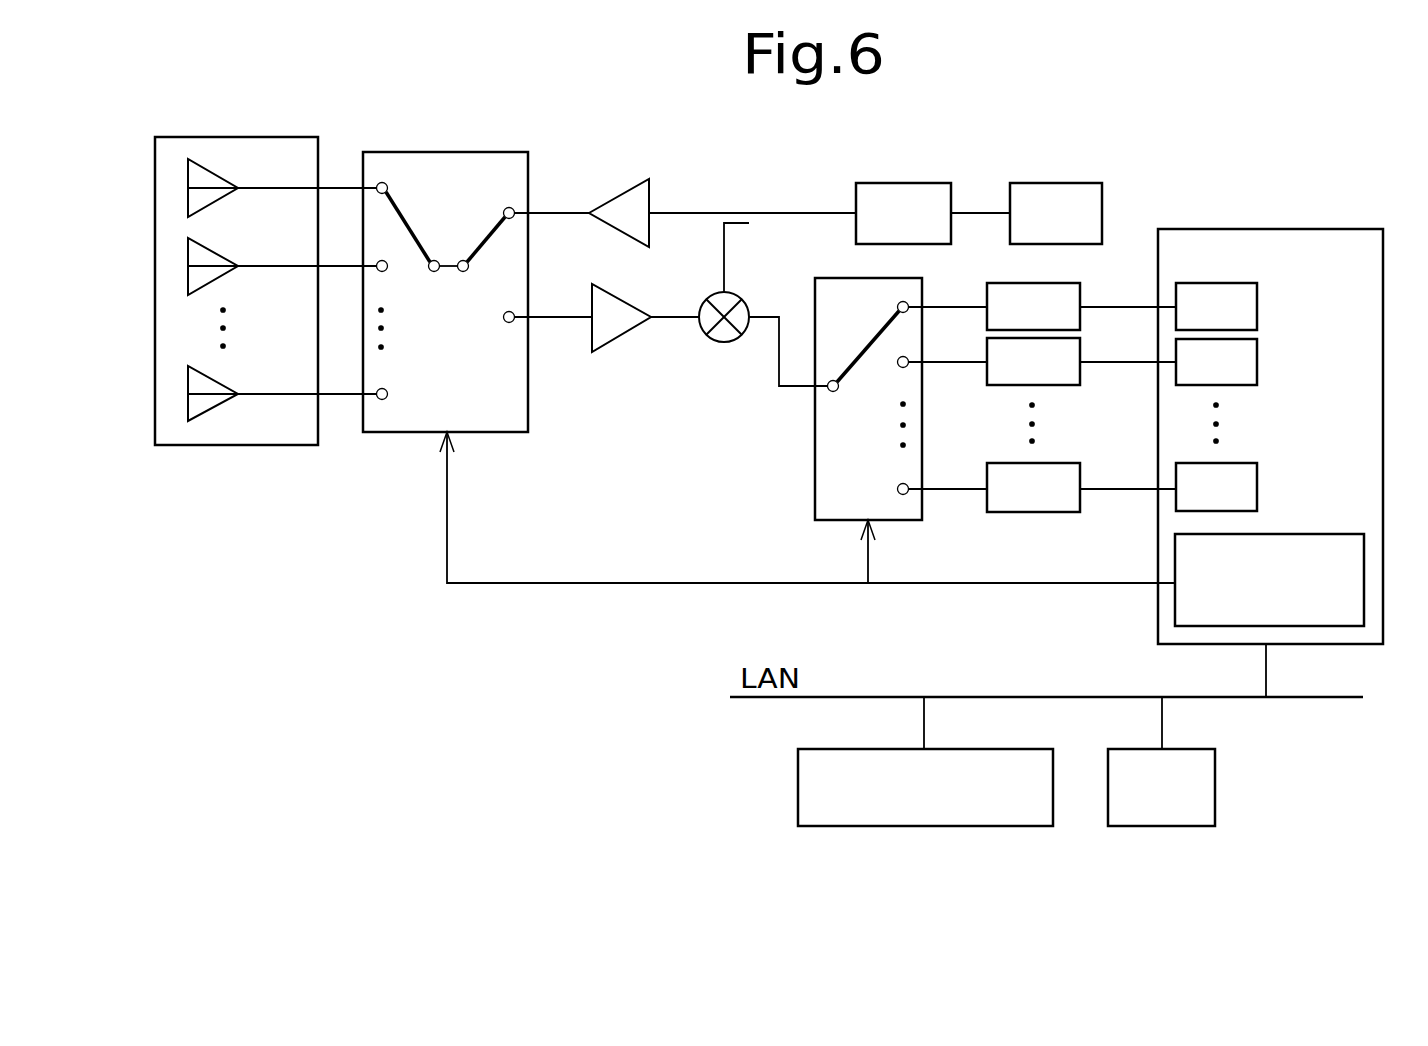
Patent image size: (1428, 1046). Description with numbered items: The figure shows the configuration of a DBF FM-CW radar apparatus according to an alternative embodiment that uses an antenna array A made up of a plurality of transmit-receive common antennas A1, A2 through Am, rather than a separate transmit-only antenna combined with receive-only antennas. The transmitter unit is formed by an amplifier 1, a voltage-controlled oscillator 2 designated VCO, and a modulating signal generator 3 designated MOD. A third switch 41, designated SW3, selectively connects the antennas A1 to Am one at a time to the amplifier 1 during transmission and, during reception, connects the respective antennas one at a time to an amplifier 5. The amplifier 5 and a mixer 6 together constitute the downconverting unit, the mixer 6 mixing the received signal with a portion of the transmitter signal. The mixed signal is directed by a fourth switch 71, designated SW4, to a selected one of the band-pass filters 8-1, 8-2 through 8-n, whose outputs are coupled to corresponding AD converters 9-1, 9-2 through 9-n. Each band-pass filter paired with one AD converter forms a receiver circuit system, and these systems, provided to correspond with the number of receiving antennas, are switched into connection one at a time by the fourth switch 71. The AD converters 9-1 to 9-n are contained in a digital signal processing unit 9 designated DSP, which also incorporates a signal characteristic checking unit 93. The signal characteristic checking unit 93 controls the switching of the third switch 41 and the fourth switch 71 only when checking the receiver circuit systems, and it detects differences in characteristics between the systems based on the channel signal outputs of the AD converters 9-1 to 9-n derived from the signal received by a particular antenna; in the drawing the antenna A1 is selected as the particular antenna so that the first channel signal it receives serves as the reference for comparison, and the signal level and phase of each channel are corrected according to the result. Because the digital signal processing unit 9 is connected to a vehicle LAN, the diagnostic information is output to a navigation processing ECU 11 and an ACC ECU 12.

The antenna array A is at (270, 137).
The transmit-receive common antenna A1 is at (188, 170).
The transmit-receive common antenna A2 is at (188, 252).
The transmit-receive common antenna Am is at (188, 378).
The third switch 41 is at (433, 152).
The amplifier 1 is at (628, 191).
The voltage-controlled oscillator 2 is at (900, 183).
The modulating signal generator 3 is at (1060, 183).
The amplifier 5 is at (617, 337).
The mixer 6 is at (727, 341).
The fourth switch 71 is at (815, 483).
The band-pass filter 8-1 is at (1080, 292).
The band-pass filter 8-2 is at (1080, 347).
The band-pass filter 8-n is at (1063, 463).
The digital signal processing unit 9 is at (1267, 229).
The AD converter 9-1 is at (1257, 308).
The AD converter 9-2 is at (1257, 362).
The AD converter 9-n is at (1257, 490).
The signal characteristic checking unit 93 is at (1364, 572).
The navigation processing ECU 11 is at (932, 826).
The ACC ECU 12 is at (1168, 826).